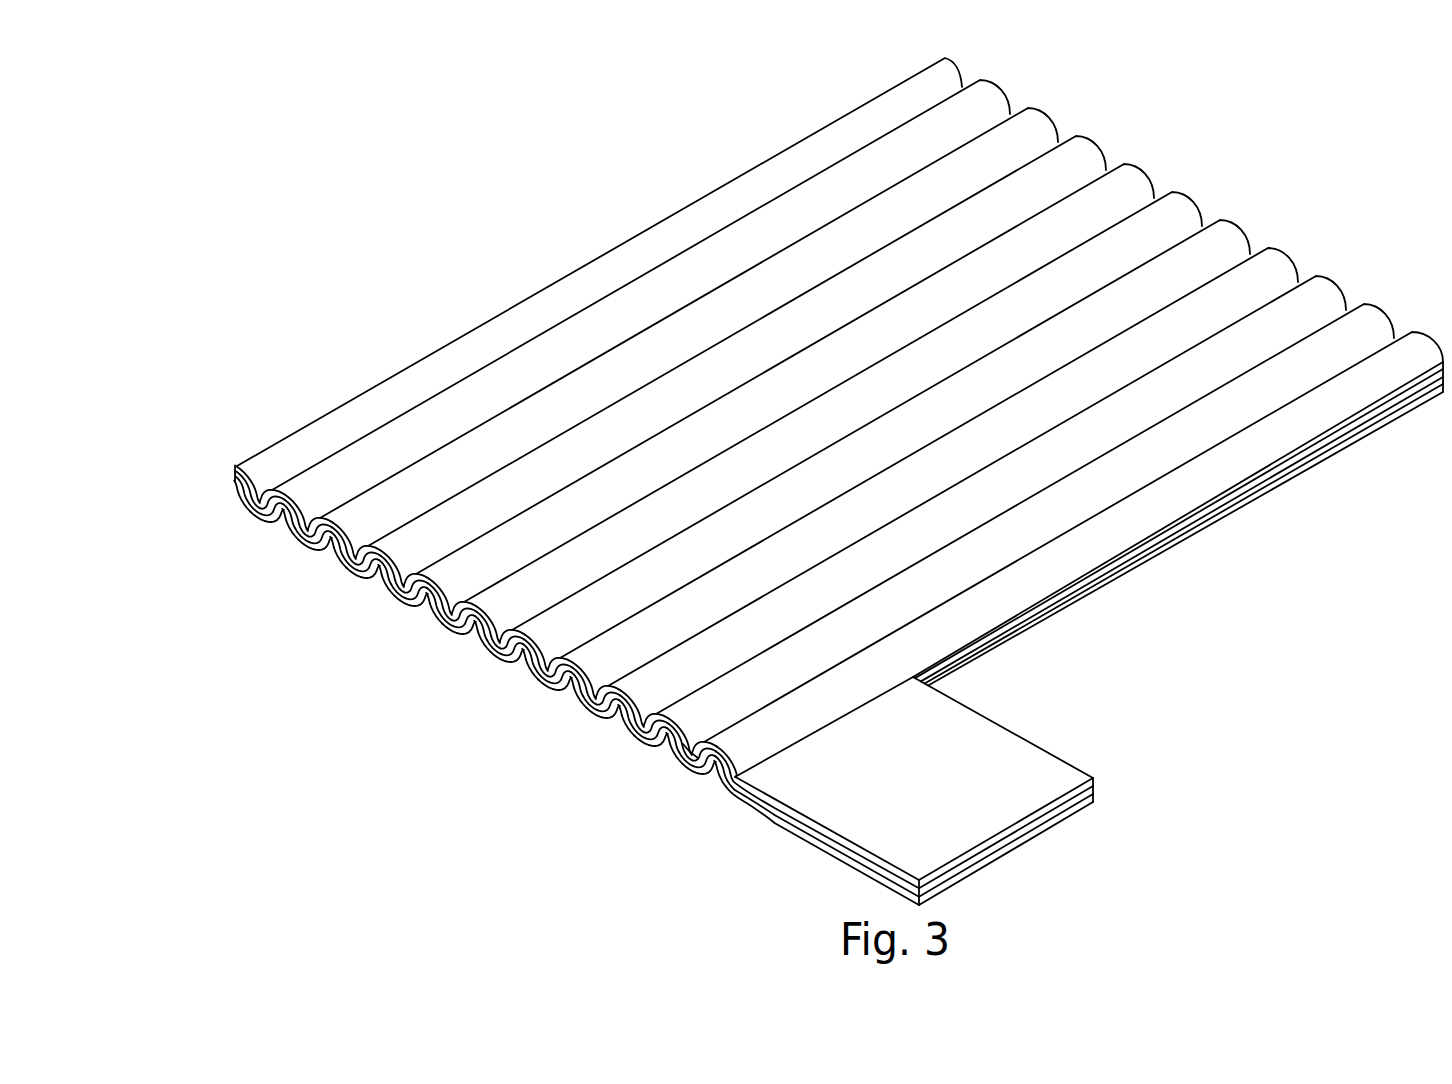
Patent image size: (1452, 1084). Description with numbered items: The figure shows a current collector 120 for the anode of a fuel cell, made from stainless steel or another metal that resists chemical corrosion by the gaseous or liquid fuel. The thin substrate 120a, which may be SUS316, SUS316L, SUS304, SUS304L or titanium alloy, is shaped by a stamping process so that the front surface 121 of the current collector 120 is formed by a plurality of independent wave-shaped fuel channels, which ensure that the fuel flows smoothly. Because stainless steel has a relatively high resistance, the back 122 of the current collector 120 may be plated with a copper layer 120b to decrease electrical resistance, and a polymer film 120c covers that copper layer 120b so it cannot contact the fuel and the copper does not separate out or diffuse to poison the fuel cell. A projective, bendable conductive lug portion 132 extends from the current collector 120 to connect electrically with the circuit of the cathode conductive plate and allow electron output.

The current collector 120 is at (1224, 165).
The front surface 121 is at (1293, 262).
The back 122 is at (670, 750).
The thin substrate 120a is at (240, 468).
The copper layer 120b is at (240, 477).
The polymer film 120c is at (242, 488).
The conductive lug portion 132 is at (1010, 807).